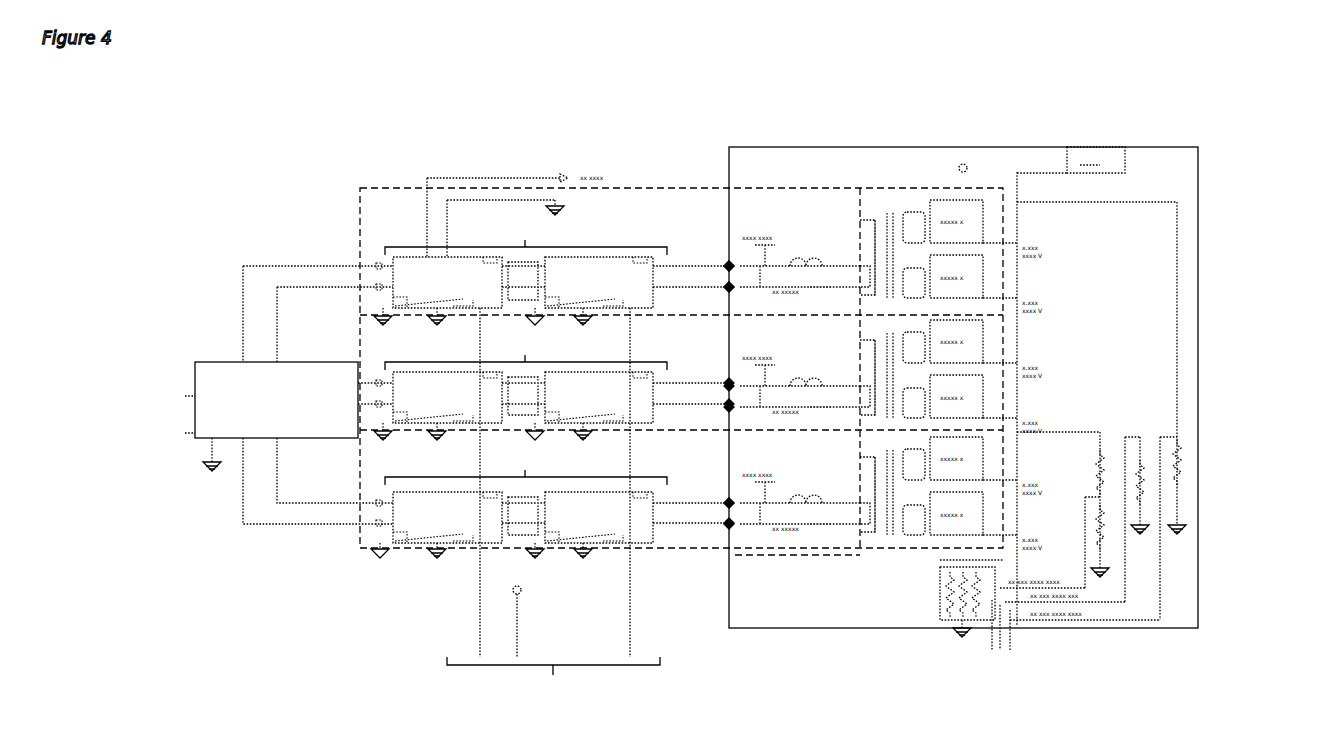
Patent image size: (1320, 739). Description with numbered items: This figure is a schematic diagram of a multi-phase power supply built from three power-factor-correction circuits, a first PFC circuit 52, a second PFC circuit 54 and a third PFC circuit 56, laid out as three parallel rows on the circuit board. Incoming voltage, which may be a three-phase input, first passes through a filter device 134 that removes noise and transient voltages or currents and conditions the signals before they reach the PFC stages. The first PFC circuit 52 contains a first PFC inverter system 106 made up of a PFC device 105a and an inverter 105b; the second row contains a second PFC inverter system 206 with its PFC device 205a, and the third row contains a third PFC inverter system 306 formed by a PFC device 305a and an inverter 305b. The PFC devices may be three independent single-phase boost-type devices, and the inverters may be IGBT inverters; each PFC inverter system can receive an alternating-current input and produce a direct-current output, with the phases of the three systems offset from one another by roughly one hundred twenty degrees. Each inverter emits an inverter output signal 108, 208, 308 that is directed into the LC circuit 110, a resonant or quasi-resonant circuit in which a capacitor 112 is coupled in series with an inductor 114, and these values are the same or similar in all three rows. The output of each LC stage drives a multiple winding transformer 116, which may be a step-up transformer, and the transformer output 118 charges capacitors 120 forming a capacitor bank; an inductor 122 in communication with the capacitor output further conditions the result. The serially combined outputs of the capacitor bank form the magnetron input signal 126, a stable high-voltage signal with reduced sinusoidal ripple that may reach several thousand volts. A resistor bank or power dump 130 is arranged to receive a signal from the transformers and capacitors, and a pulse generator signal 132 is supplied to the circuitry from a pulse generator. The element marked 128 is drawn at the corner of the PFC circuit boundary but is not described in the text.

The first PFC circuit 52 is at (385, 187).
The second PFC circuit 54 is at (402, 382).
The third PFC circuit 56 is at (362, 478).
The PFC device 105a is at (447, 282).
The inverter 105b is at (599, 282).
The first PFC inverter system 106 is at (526, 234).
The inverter output signal 108 is at (722, 262).
The LC circuit 110 is at (740, 165).
The capacitor 112 is at (767, 258).
The inductor 114 is at (825, 265).
The transformer 116 is at (963, 262).
The transformer output 118 is at (993, 285).
The capacitor 120 is at (1020, 272).
The inductor 122 is at (1087, 163).
The magnetron input signal 126 is at (1125, 147).
The module boundary corner 128 is at (962, 553).
The resistor bank 130 is at (930, 597).
The pulse generator signal 132 is at (556, 641).
The filter device 134 is at (212, 373).
The PFC device 205a is at (533, 397).
The second PFC inverter system 206 is at (526, 350).
The inverter output signal 208 is at (722, 380).
The PFC device 305a is at (447, 517).
The inverter 305b is at (599, 517).
The third PFC inverter system 306 is at (526, 465).
The inverter output signal 308 is at (722, 500).